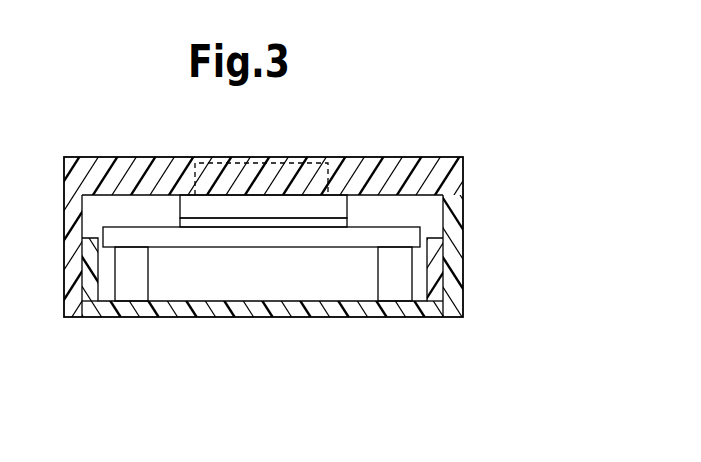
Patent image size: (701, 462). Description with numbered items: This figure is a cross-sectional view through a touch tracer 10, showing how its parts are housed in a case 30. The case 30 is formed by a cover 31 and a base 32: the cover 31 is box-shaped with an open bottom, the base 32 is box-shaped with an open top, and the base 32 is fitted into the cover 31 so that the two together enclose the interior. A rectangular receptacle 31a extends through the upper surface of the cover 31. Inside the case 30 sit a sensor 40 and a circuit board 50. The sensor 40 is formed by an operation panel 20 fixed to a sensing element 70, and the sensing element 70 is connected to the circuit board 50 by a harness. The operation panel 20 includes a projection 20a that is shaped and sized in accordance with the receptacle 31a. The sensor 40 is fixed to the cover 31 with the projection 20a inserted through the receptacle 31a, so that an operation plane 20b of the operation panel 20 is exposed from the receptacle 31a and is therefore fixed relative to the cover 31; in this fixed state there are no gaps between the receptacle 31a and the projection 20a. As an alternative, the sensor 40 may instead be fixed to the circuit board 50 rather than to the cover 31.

The touch tracer 10 is at (528, 108).
The operation panel 20 is at (311, 157).
The projection 20a is at (309, 163).
The operation plane 20b is at (264, 163).
The case 30 is at (112, 363).
The cover 31 is at (67, 304).
The receptacle 31a is at (195, 163).
The base 32 is at (100, 317).
The sensor 40 is at (179, 208).
The circuit board 50 is at (302, 248).
The sensing element 70 is at (217, 224).